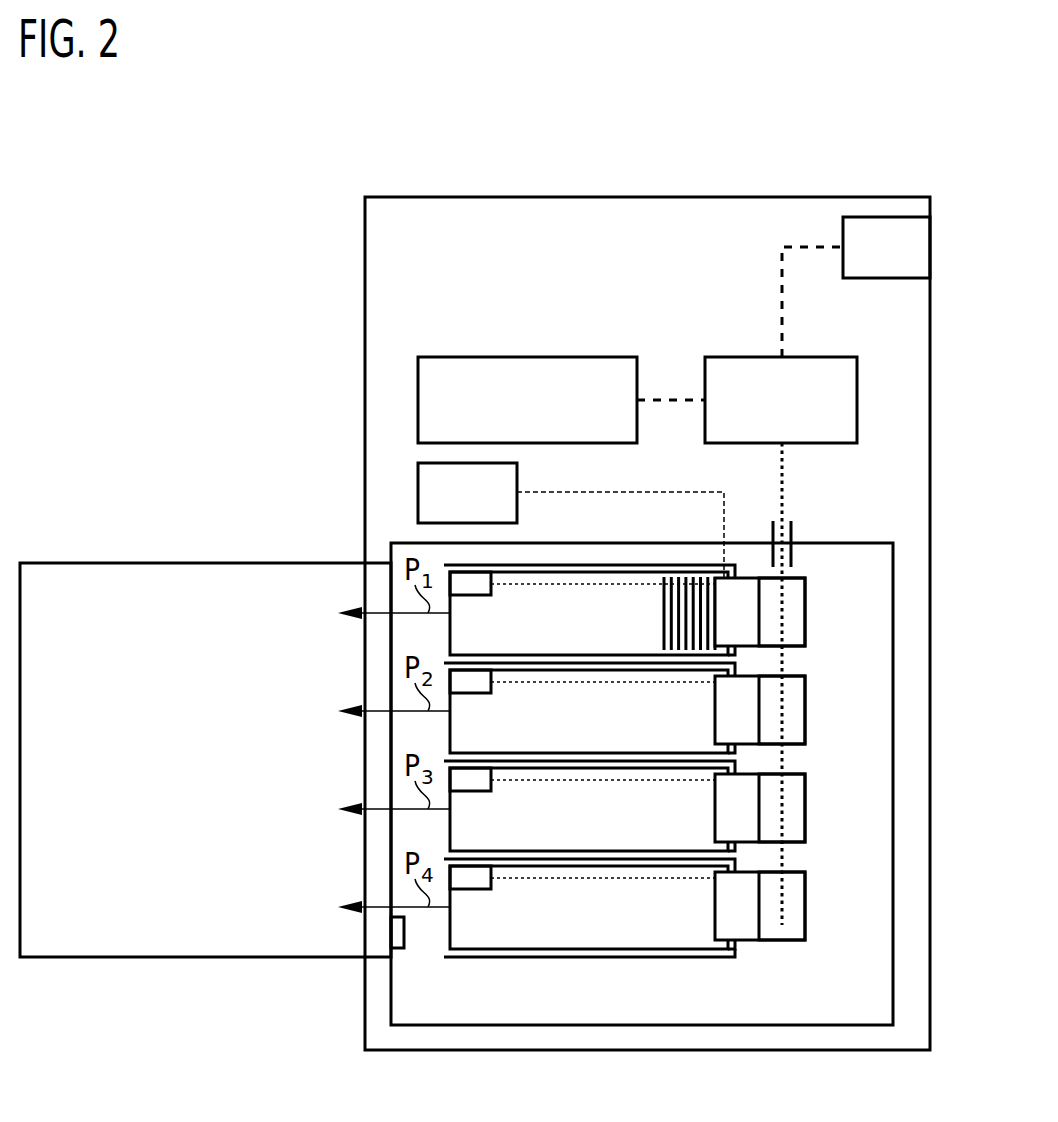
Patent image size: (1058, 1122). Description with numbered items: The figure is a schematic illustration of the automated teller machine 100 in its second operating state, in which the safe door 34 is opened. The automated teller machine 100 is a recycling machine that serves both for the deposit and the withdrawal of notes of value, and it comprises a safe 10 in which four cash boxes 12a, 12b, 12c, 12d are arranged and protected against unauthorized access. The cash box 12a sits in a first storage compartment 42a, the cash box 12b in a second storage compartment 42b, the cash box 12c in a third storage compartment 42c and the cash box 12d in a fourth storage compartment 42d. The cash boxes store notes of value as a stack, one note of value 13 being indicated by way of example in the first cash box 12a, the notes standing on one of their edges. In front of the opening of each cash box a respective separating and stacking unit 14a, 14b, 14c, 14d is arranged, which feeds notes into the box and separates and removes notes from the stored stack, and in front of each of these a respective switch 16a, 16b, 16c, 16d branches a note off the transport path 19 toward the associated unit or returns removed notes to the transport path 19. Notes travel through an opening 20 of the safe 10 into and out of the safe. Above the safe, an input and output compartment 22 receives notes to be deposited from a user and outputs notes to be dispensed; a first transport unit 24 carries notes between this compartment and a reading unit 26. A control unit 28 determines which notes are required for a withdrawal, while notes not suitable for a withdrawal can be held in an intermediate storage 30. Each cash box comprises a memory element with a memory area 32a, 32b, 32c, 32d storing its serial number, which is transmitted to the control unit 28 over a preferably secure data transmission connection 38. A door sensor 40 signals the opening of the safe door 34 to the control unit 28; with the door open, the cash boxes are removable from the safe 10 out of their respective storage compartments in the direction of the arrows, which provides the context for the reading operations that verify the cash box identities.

The automated teller machine 100 is at (332, 170).
The safe 10 is at (870, 543).
The cash box 12a is at (642, 633).
The cash box 12b is at (642, 731).
The cash box 12c is at (642, 829).
The cash box 12d is at (642, 927).
The note of value 13 is at (697, 590).
The separating and stacking unit 14a is at (750, 626).
The separating and stacking unit 14b is at (750, 724).
The separating and stacking unit 14c is at (750, 822).
The separating and stacking unit 14d is at (750, 920).
The switch 16a is at (797, 593).
The switch 16b is at (797, 691).
The switch 16c is at (797, 789).
The switch 16d is at (797, 887).
The transport path 19 is at (794, 530).
The opening 20 is at (756, 512).
The input and output compartment 22 is at (853, 230).
The first transport unit 24 is at (781, 298).
The reading unit 26 is at (828, 372).
The control unit 28 is at (430, 493).
The intermediate storage 30 is at (430, 400).
The memory area 32a is at (467, 584).
The memory area 32b is at (467, 682).
The memory area 32c is at (467, 780).
The memory area 32d is at (467, 878).
The safe door 34 is at (197, 578).
The data transmission connection 38 is at (568, 492).
The door sensor 40 is at (405, 933).
The first storage compartment 42a is at (616, 565).
The second storage compartment 42b is at (738, 668).
The third storage compartment 42c is at (738, 766).
The fourth storage compartment 42d is at (738, 864).